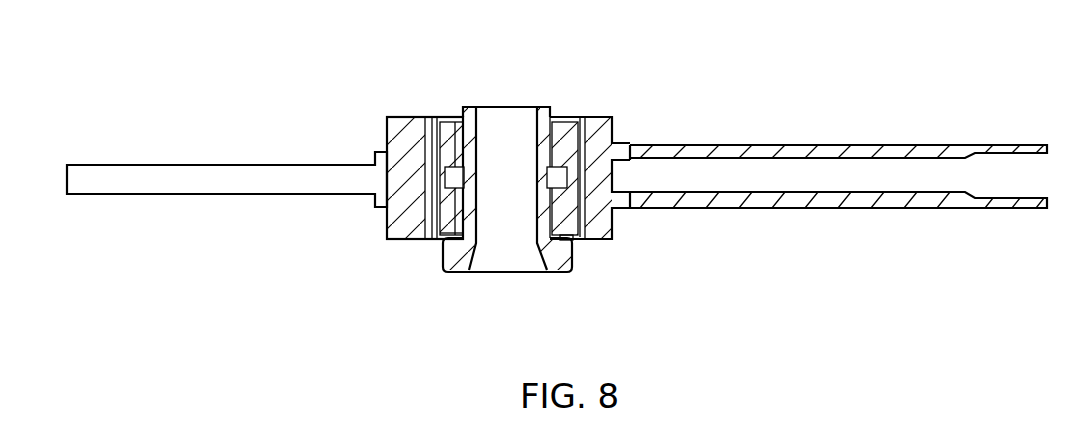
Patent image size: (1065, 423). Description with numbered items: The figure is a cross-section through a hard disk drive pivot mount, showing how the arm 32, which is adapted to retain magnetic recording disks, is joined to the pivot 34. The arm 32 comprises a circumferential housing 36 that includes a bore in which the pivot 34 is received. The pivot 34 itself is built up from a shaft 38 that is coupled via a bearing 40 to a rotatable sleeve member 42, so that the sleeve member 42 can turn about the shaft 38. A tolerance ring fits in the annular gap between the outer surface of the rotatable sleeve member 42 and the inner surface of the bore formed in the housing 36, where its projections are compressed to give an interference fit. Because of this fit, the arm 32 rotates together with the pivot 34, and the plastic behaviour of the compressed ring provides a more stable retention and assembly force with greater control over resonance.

The arm 32 is at (705, 150).
The pivot 34 is at (578, 77).
The circumferential housing 36 is at (595, 234).
The shaft 38 is at (562, 270).
The bearing 40 is at (452, 219).
The rotatable sleeve member 42 is at (433, 118).